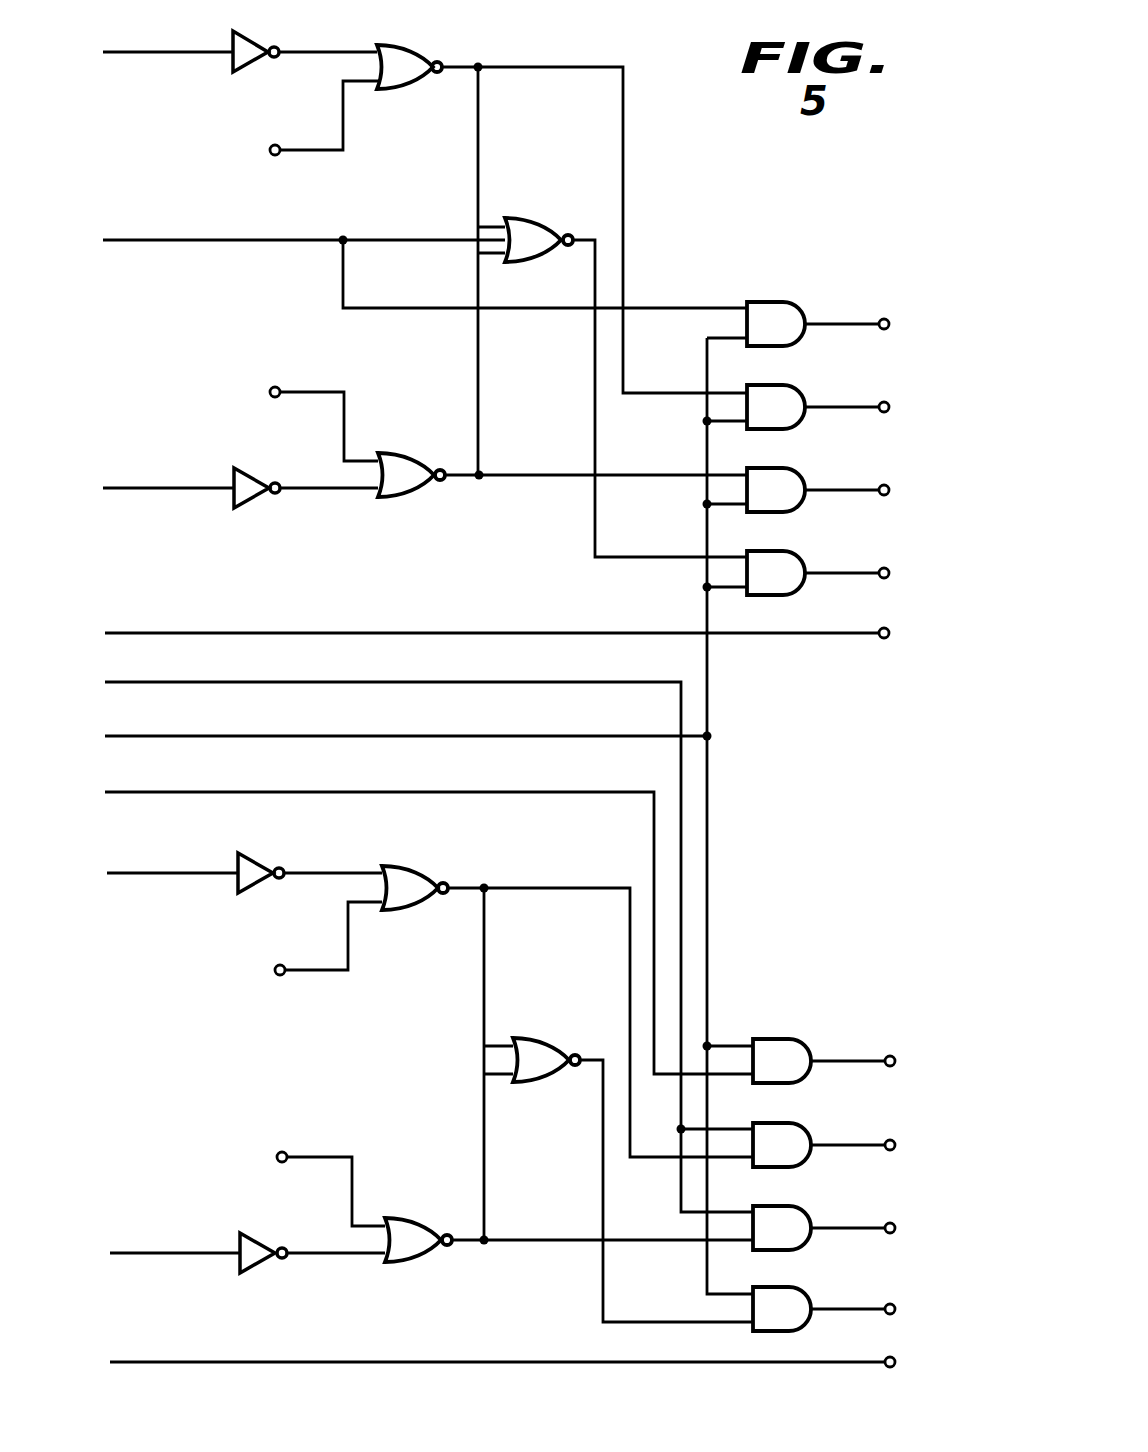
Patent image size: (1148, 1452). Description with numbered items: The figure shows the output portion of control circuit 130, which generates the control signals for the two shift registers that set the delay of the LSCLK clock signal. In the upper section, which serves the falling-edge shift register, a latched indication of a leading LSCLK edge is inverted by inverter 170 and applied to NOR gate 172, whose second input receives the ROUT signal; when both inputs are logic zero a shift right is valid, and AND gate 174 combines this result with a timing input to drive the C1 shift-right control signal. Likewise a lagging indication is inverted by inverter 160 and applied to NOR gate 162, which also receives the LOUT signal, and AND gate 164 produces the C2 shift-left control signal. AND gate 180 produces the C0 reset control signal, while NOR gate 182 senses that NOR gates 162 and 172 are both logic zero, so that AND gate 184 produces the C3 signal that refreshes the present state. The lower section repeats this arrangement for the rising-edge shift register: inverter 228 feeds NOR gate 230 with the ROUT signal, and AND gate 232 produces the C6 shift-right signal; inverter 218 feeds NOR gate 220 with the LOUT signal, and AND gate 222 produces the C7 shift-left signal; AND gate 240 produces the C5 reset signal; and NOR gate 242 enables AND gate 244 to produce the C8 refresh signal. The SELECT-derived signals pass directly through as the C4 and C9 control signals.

The control circuit 130 is at (828, 185).
The inverter 170 is at (254, 36).
The NOR gate 172 is at (417, 91).
The NOR gate 182 is at (548, 220).
The AND gate 180 is at (800, 303).
The AND gate 174 is at (800, 386).
The AND gate 164 is at (800, 470).
The AND gate 184 is at (800, 553).
The NOR gate 162 is at (414, 455).
The inverter 160 is at (250, 508).
The inverter 228 is at (258, 858).
The NOR gate 230 is at (421, 910).
The NOR gate 242 is at (548, 1040).
The NOR gate 220 is at (426, 1220).
The inverter 218 is at (259, 1270).
The AND gate 240 is at (805, 1042).
The AND gate 232 is at (805, 1125).
The AND gate 222 is at (805, 1209).
The AND gate 244 is at (805, 1291).